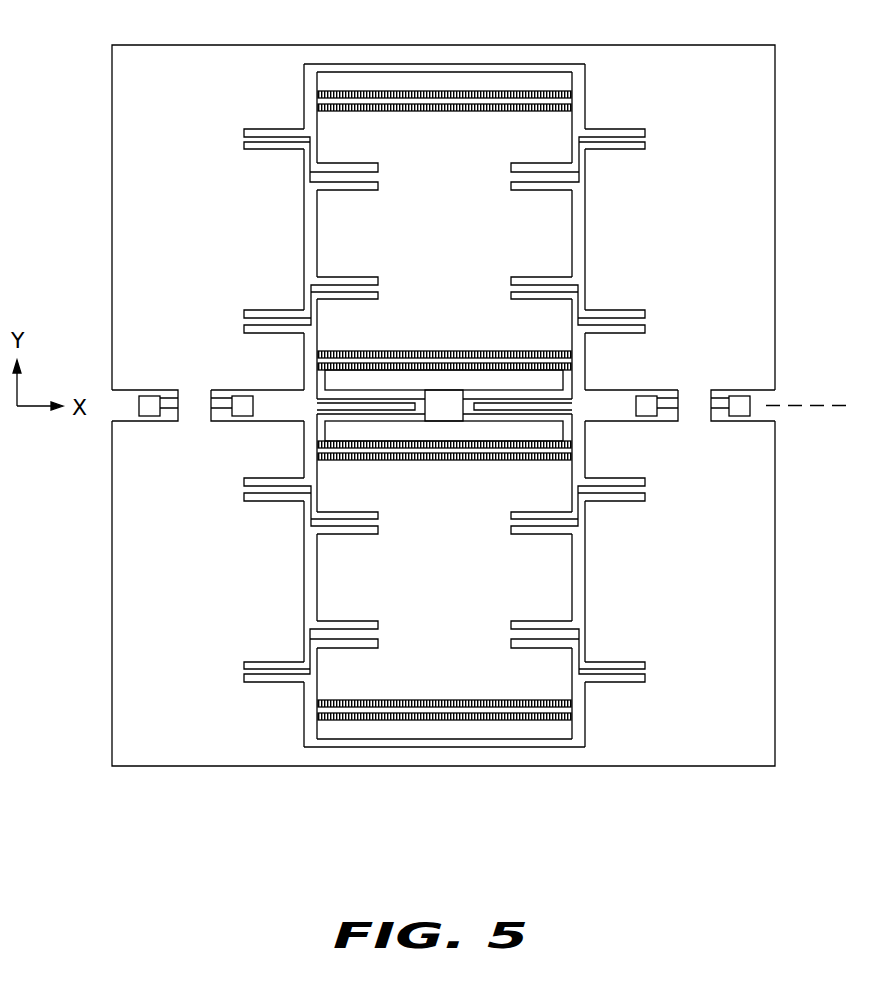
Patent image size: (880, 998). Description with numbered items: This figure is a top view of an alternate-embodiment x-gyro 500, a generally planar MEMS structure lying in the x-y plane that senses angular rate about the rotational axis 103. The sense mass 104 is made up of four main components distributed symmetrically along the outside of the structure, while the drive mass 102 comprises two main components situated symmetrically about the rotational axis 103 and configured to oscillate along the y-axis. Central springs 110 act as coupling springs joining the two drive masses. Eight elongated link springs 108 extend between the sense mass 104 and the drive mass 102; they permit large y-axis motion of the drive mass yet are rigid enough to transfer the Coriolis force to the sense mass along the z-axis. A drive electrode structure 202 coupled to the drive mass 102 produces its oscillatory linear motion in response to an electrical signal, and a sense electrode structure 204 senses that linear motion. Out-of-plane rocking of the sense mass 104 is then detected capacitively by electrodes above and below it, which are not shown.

The x-gyro 500 is at (465, 877).
The sense mass 104 is at (228, 244).
The drive mass 102 is at (463, 244).
The elongated link springs 108 is at (609, 129).
The sense electrode structure 204 is at (438, 89).
The drive electrode structure 202 is at (441, 351).
The central springs 110 is at (366, 397).
The rotational axis 103 is at (806, 385).